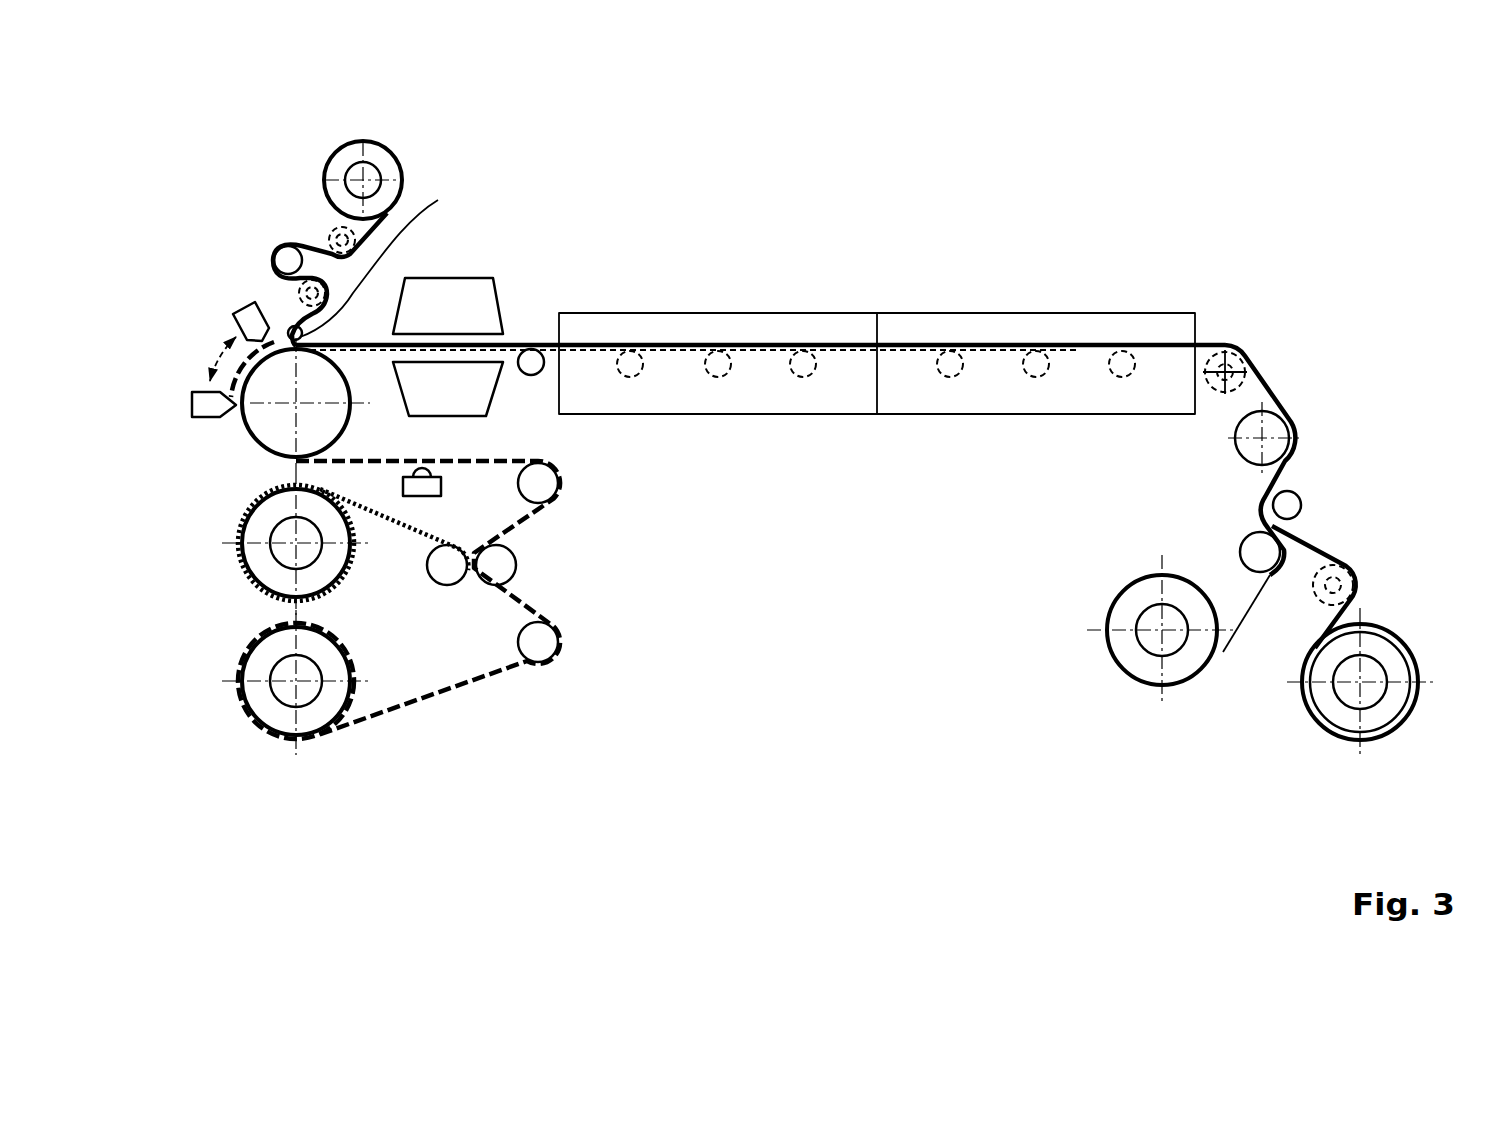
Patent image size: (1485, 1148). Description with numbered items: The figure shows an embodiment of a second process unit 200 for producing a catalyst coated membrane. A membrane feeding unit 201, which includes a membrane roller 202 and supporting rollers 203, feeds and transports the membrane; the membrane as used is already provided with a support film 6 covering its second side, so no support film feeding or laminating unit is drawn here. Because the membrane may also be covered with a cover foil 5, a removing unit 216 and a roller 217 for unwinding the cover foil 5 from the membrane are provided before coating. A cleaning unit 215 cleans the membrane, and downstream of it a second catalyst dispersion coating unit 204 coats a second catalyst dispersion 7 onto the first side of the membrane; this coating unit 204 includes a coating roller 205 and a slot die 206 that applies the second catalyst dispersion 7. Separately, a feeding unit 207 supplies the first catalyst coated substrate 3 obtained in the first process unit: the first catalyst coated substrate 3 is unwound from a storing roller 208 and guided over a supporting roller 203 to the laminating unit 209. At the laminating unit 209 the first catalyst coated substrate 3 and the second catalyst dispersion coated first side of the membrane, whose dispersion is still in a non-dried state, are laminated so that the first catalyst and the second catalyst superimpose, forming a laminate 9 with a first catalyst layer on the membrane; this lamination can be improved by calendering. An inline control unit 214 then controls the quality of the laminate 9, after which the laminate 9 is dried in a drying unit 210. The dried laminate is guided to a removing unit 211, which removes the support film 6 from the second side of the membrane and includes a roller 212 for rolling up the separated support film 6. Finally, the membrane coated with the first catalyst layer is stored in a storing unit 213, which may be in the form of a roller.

The second process unit 200 is at (832, 182).
The feeding unit 207 is at (359, 209).
The storing roller 208 is at (384, 156).
The first catalyst coated substrate 3 is at (305, 245).
The laminating unit 209 is at (390, 252).
The second catalyst dispersion coating unit 204 is at (239, 358).
The coating roller 205 is at (252, 422).
The second catalyst dispersion 7 is at (245, 349).
The slot die 206 is at (240, 293).
The membrane feeding unit 201 is at (808, 586).
The supporting rollers 203 is at (542, 487).
The roller 217 is at (262, 568).
The cover foil 5 is at (240, 517).
The membrane roller 202 is at (260, 703).
The cleaning unit 215 is at (412, 486).
The removing unit 216 is at (417, 575).
The inline control unit 214 is at (470, 268).
The laminate 9 is at (524, 345).
The drying unit 210 is at (873, 297).
The removing unit 211 is at (1253, 581).
The support film 6 is at (1240, 620).
The roller 212 is at (1133, 660).
The storing unit 213 is at (1330, 742).